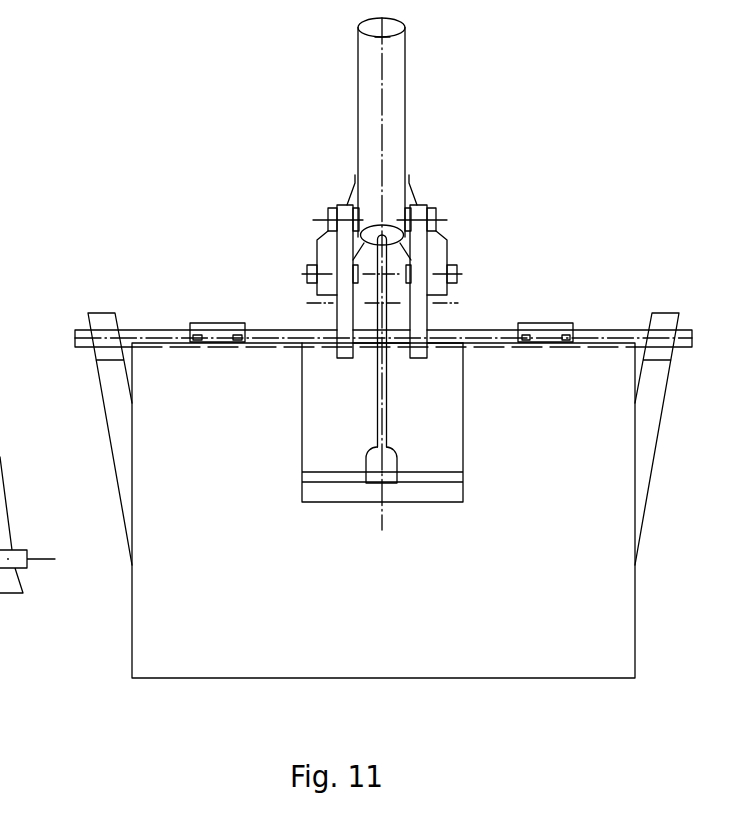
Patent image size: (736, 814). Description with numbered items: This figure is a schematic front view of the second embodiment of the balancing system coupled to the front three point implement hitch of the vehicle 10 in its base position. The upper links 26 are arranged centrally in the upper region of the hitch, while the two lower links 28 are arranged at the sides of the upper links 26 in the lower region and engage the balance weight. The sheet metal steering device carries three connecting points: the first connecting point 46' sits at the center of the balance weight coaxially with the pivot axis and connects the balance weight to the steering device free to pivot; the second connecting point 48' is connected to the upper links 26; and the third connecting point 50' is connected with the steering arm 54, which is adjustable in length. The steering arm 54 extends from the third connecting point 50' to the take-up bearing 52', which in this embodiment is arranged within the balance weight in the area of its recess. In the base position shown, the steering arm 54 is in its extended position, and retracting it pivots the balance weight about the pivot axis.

The vehicle 10 is at (27, 635).
The upper links 26 is at (320, 257).
The lower links 28 is at (100, 392).
The first connecting point 46' is at (383, 302).
The second connecting point 48' is at (424, 229).
The third connecting point 50' is at (417, 233).
The take-up bearing 52' is at (352, 421).
The steering arm 54 is at (392, 88).